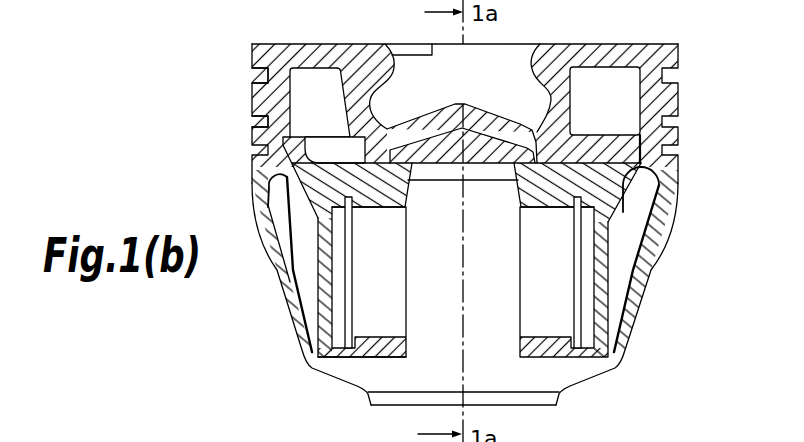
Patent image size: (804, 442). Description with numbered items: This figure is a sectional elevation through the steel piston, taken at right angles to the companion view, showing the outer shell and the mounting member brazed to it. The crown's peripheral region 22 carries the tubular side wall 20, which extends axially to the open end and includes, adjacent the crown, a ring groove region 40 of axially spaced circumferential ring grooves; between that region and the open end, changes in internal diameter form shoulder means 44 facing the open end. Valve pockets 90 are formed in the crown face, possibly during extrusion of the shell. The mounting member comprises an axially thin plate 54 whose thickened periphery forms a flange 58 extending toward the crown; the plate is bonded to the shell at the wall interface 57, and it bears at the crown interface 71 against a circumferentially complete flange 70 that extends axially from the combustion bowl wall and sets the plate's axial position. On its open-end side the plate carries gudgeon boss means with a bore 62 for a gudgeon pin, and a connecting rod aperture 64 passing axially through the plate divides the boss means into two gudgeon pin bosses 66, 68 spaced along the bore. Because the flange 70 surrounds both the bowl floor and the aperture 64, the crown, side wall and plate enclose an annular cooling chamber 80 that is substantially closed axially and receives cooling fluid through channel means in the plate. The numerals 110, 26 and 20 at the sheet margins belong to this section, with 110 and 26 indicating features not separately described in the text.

The piston 110 is at (210, 124).
The peripheral region 22 is at (593, 43).
The ring groove region 40 is at (240, 100).
The valve pockets 90 is at (405, 47).
The annular cooling chamber 80 is at (582, 83).
The flange 70 is at (353, 143).
The flange 58 is at (624, 148).
The crown interface 71 is at (402, 163).
The wall interface 57 is at (651, 216).
The shoulder means 44 is at (652, 188).
The aperture 64 is at (446, 190).
The bore 62 is at (366, 283).
The gudgeon pin boss 68 is at (363, 352).
The gudgeon pin boss 66 is at (560, 352).
The plate 54 is at (624, 205).
The piston part 26 is at (216, 434).
The tubular side wall 20 is at (46, 434).